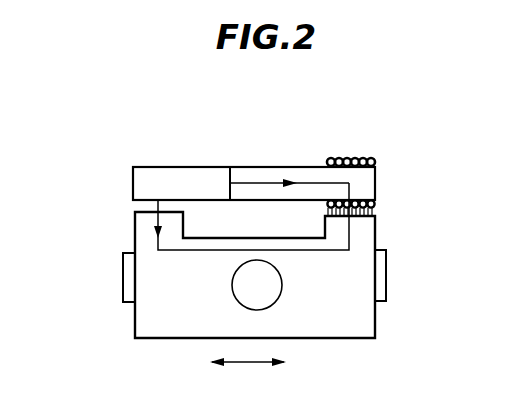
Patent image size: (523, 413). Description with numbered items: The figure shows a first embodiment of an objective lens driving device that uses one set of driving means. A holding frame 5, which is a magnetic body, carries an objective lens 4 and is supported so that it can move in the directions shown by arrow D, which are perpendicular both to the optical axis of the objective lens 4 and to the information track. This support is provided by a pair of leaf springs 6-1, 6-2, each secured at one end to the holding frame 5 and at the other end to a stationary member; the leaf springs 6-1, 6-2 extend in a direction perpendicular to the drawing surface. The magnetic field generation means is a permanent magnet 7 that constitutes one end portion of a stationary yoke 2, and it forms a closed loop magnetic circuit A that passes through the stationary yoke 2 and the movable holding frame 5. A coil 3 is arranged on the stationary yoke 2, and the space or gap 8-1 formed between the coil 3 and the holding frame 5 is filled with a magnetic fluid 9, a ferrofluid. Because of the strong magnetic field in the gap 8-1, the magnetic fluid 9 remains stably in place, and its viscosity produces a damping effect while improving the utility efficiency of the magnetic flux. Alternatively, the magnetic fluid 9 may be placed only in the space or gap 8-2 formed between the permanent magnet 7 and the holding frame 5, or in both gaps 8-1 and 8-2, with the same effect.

The stationary yoke 2 is at (316, 167).
The coil 3 is at (352, 160).
The objective lens 4 is at (242, 292).
The holding frame 5 is at (343, 326).
The leaf spring 6-1 is at (386, 278).
The leaf spring 6-2 is at (123, 278).
The permanent magnet 7 is at (177, 167).
The space or gap 8-1 is at (382, 201).
The space or gap 8-2 is at (126, 206).
The magnetic fluid 9 is at (378, 208).
The closed loop magnetic circuit A is at (262, 180).
The direction of movement D is at (245, 363).